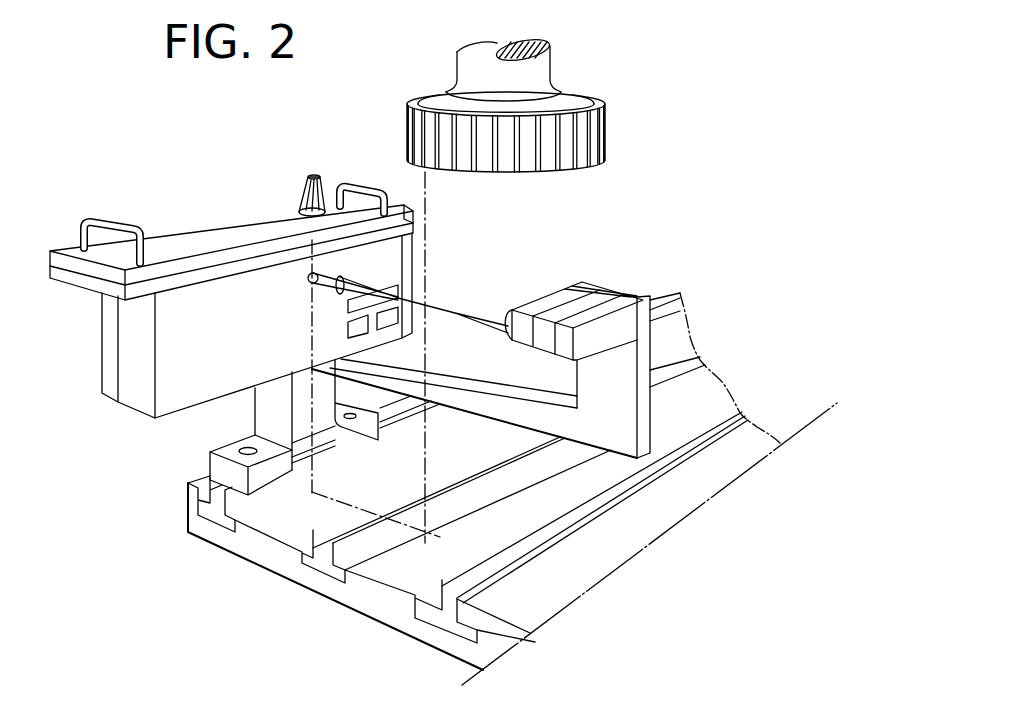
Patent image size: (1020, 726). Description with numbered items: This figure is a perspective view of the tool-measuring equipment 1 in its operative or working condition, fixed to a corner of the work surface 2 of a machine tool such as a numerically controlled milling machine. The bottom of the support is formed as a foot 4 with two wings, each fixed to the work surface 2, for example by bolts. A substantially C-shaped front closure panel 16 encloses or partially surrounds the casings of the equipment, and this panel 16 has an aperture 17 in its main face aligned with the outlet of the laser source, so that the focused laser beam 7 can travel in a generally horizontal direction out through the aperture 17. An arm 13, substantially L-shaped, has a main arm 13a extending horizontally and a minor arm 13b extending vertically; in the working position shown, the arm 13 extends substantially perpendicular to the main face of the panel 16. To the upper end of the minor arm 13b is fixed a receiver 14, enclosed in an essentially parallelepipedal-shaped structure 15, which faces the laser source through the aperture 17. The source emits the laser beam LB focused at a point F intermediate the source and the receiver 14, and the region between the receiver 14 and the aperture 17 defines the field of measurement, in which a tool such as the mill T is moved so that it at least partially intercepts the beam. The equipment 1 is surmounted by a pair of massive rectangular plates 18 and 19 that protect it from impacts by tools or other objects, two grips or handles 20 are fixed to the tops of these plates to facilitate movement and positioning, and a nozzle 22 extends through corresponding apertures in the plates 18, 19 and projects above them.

The equipment 1 is at (203, 208).
The work surface 2 is at (748, 432).
The foot 4 is at (350, 445).
The laser beam 7 is at (362, 280).
The arm 13 is at (516, 397).
The main arm 13a is at (468, 395).
The minor arm 13b is at (625, 373).
The receiver 14 is at (543, 295).
The parallelepipedal-shaped structure 15 is at (602, 295).
The front closure panel 16 is at (238, 292).
The aperture 17 is at (308, 280).
The protective plate 18 is at (173, 242).
The protective plate 19 is at (73, 283).
The handle 20 is at (85, 222).
The nozzle 22 is at (307, 197).
The mill T is at (585, 133).
The focal point F is at (448, 313).
The laser beam LB is at (325, 366).